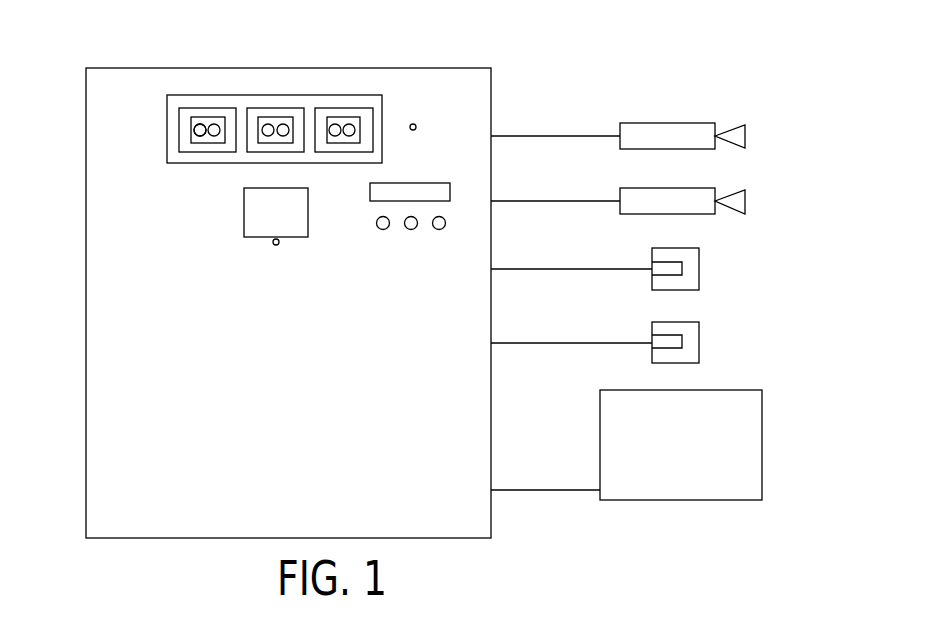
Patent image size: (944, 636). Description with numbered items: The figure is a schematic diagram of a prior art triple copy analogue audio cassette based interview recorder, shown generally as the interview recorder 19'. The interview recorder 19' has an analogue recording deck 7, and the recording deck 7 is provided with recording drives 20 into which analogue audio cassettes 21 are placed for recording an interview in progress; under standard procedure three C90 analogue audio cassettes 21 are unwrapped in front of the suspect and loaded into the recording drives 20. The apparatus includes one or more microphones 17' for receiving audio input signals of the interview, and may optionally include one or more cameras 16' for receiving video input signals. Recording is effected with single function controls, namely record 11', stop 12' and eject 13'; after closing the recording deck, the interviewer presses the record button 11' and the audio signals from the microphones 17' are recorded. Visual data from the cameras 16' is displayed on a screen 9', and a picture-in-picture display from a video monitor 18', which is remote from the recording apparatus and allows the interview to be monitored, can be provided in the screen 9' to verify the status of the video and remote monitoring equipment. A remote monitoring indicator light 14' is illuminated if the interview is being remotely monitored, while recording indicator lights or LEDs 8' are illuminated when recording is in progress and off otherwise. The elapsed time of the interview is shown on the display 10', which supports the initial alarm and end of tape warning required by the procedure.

The analogue recording deck 7 is at (357, 95).
The recording drives 20 is at (333, 108).
The analogue audio cassettes 21 is at (192, 131).
The interview recorder 19' is at (291, 277).
The recording indicator lights 8' is at (437, 105).
The screen 9' is at (249, 212).
The display 10' is at (415, 164).
The record control button 11' is at (376, 255).
The stop control 12' is at (404, 255).
The eject control 13' is at (432, 255).
The remote monitoring indicator light 14' is at (266, 274).
The cameras 16' is at (633, 147).
The microphones 17' is at (626, 305).
The video monitor 18' is at (658, 445).